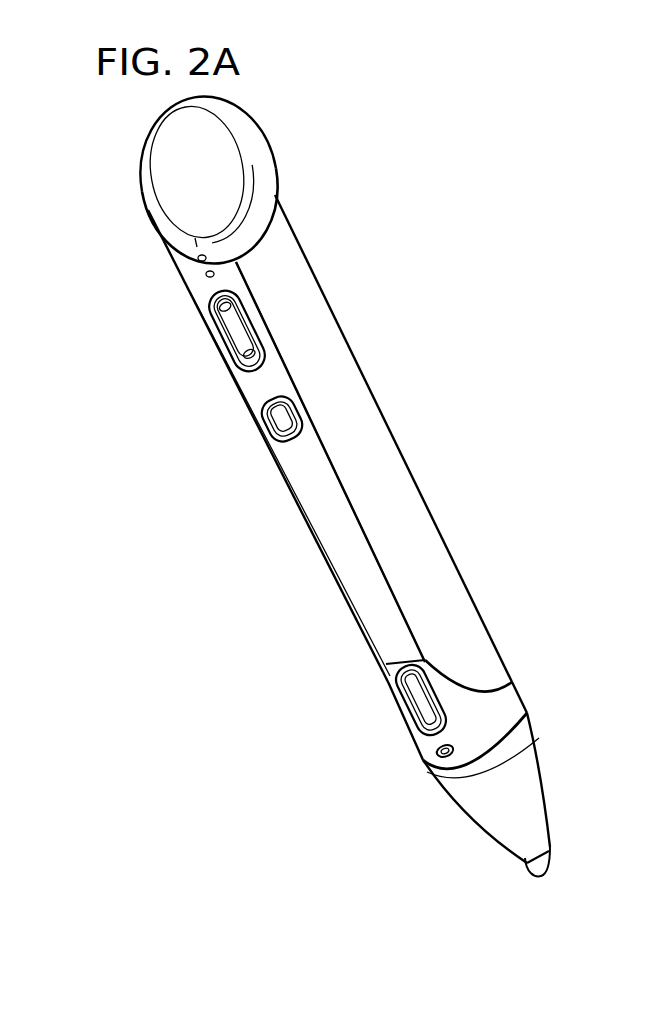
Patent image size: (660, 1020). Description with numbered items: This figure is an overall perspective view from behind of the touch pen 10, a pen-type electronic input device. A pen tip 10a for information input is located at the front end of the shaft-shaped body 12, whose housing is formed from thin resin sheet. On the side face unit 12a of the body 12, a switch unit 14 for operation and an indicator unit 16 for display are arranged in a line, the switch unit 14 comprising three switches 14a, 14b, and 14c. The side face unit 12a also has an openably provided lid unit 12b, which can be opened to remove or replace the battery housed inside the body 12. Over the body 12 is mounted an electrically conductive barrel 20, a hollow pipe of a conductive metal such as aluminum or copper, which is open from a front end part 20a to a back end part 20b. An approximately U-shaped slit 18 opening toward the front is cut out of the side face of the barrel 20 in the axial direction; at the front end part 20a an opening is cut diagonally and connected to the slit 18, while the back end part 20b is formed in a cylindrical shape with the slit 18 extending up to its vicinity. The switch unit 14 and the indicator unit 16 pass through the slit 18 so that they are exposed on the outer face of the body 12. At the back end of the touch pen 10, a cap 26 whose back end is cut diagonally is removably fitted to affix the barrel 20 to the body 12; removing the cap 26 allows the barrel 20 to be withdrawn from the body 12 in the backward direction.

The touch pen 10 is at (312, 479).
The pen tip 10a is at (527, 866).
The shaft-shaped body 12 is at (485, 722).
The side face unit 12a is at (375, 610).
The lid unit 12b is at (363, 580).
The switch unit 14 is at (263, 551).
The switch 14a is at (408, 712).
The switch 14b is at (283, 422).
The switch 14c is at (240, 330).
The indicator unit 16 is at (330, 562).
The slit 18 is at (330, 497).
The barrel 20 is at (462, 612).
The front end part 20a is at (520, 686).
The back end part 20b is at (268, 217).
The cap 26 is at (262, 193).